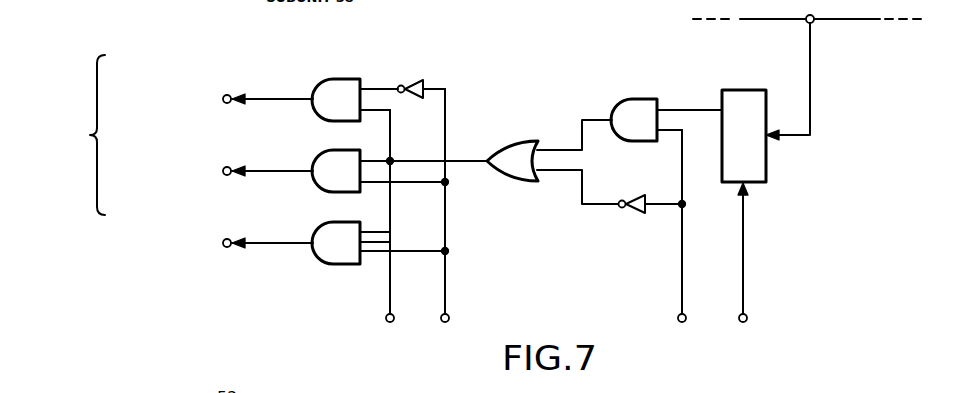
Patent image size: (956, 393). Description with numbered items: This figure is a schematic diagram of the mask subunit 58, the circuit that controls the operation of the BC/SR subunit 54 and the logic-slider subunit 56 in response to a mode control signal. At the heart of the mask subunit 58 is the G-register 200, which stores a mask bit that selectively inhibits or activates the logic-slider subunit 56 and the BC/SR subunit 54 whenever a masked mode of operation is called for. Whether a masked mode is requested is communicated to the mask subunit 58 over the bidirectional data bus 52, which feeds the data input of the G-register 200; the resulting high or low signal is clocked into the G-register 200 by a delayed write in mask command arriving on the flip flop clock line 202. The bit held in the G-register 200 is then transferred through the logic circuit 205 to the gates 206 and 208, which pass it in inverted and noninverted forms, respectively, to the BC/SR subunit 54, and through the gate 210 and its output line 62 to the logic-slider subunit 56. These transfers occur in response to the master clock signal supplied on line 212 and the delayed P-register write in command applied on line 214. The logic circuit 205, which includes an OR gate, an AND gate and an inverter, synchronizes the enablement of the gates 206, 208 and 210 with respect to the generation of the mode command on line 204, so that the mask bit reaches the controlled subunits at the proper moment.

The bidirectional data bus 52 is at (768, 22).
The BC/SR subunit 54 is at (58, 135).
The logic-slider subunit 56 is at (168, 253).
The mask subunit 58 is at (614, 76).
The output line to logic-slider subunit 62 is at (290, 245).
The G-register 200 is at (758, 159).
The flip flop clock line 202 is at (746, 276).
The mode command line 204 is at (682, 272).
The logic circuit 205 is at (551, 140).
The gate 206 is at (343, 85).
The gate 208 is at (340, 155).
The gate 210 is at (333, 230).
The master clock line 212 is at (448, 272).
The delayed P-register write in command line 214 is at (390, 294).